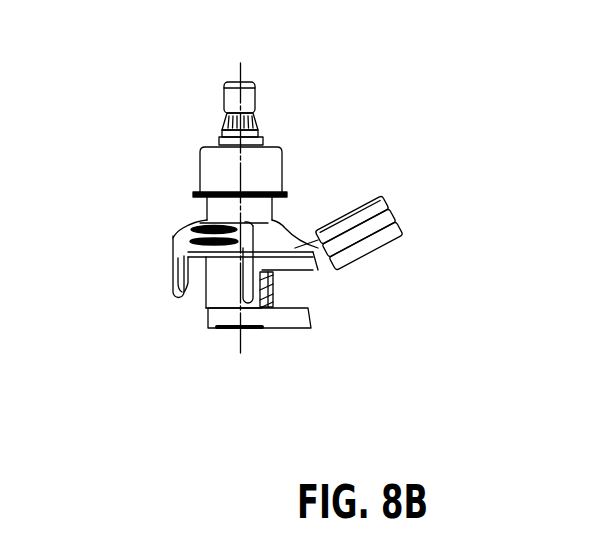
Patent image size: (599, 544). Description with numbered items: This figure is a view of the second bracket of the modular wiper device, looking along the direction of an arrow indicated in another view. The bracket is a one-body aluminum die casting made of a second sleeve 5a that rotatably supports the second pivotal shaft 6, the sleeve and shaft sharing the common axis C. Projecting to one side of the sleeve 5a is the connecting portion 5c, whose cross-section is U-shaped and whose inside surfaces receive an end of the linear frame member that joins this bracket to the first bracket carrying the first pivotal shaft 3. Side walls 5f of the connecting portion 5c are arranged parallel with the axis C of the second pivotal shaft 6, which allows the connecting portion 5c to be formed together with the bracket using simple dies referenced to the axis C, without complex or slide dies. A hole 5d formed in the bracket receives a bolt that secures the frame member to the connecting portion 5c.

The axis of the second pivotal shaft C is at (241, 192).
The second pivotal shaft 6 is at (250, 100).
The hole for bolt 5d is at (202, 222).
The connecting portion 5c is at (178, 253).
The second sleeve 5a is at (225, 297).
The side wall 5f is at (175, 278).
The first pivotal shaft 3 is at (302, 258).